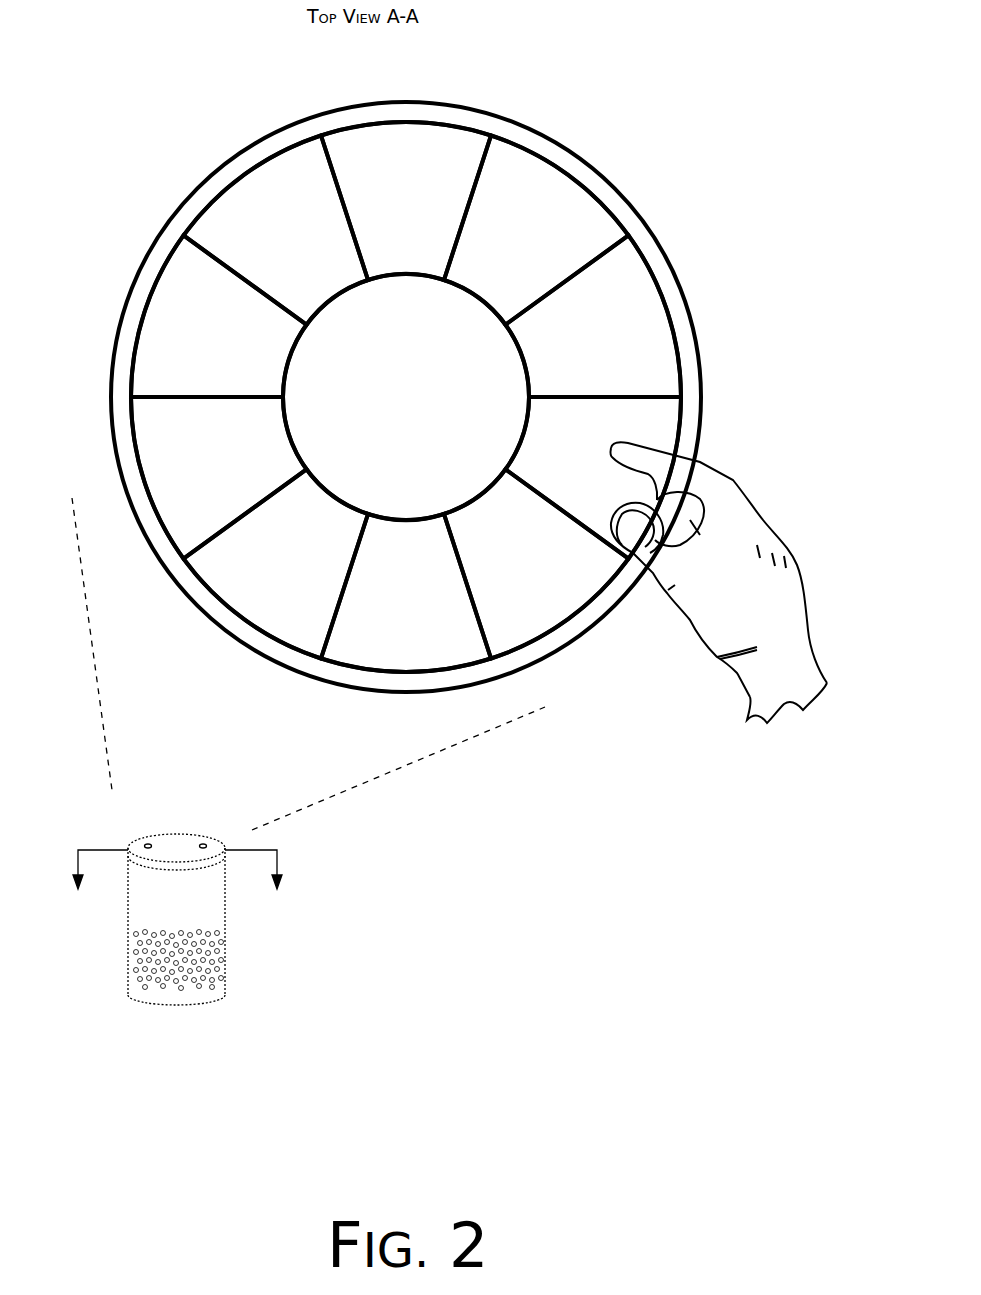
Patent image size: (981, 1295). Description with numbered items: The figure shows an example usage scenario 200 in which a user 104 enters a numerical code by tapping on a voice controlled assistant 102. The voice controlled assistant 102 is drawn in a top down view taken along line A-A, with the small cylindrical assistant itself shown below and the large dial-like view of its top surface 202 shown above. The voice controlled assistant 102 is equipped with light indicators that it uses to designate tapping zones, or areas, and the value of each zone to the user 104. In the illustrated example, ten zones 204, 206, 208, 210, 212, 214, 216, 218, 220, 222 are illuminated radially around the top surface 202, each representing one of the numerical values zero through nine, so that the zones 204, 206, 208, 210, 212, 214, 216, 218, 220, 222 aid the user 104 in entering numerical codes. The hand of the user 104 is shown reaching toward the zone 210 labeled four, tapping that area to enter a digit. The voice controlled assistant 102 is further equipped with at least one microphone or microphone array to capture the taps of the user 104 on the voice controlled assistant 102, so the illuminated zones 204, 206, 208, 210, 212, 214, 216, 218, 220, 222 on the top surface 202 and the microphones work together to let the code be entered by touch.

The voice controlled assistant 102 is at (217, 1013).
The user 104 is at (758, 682).
The usage scenario 200 is at (688, 58).
The top surface 202 is at (283, 115).
The zone 204 is at (430, 143).
The zone 206 is at (578, 217).
The zone 208 is at (660, 332).
The zone 210 is at (643, 425).
The zone 212 is at (530, 628).
The zone 214 is at (373, 648).
The zone 216 is at (260, 600).
The zone 218 is at (168, 477).
The zone 220 is at (168, 332).
The zone 222 is at (233, 217).